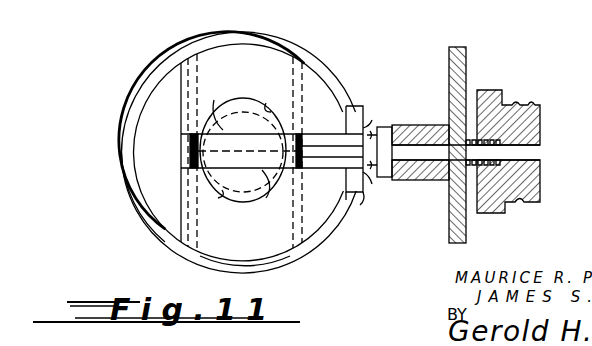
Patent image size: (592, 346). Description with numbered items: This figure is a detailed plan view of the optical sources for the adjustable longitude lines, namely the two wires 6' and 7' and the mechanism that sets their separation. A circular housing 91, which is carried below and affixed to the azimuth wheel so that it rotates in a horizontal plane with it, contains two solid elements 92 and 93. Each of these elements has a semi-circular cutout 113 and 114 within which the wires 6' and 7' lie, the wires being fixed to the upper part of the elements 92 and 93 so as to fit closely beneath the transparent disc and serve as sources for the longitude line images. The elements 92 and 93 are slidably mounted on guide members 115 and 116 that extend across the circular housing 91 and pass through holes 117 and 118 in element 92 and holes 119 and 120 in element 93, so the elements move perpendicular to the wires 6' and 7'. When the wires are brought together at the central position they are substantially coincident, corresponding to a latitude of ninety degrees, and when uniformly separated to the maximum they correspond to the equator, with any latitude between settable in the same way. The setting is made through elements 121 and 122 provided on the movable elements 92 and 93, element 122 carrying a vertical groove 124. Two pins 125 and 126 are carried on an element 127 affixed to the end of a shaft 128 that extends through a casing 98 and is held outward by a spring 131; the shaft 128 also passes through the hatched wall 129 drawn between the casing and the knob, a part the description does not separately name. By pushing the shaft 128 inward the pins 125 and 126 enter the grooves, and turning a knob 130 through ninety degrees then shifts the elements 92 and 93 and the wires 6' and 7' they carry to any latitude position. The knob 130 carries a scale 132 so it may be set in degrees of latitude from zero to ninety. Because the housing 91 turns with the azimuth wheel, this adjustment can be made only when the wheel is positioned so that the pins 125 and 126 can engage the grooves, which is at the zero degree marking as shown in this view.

The wire 6' is at (243, 134).
The wire 7' is at (268, 197).
The circular housing 91 is at (124, 163).
The solid element 92 is at (260, 52).
The solid element 93 is at (283, 257).
The casing 98 is at (450, 238).
The semi-circular cutout 113 is at (243, 139).
The semi-circular cutout 114 is at (224, 201).
The guide member 115 is at (187, 148).
The guide member 116 is at (332, 143).
The hole 117 is at (193, 70).
The hole 118 is at (292, 70).
The hole 119 is at (190, 205).
The hole 120 is at (344, 200).
The element 121 is at (348, 119).
The element 122 is at (352, 181).
The vertical groove 124 is at (358, 157).
The pin 125 is at (379, 178).
The pin 126 is at (374, 128).
The element 127 is at (395, 181).
The shaft 128 is at (419, 122).
The wall 129 is at (439, 110).
The knob 130 is at (518, 102).
The spring 131 is at (469, 128).
The scale 132 is at (493, 215).